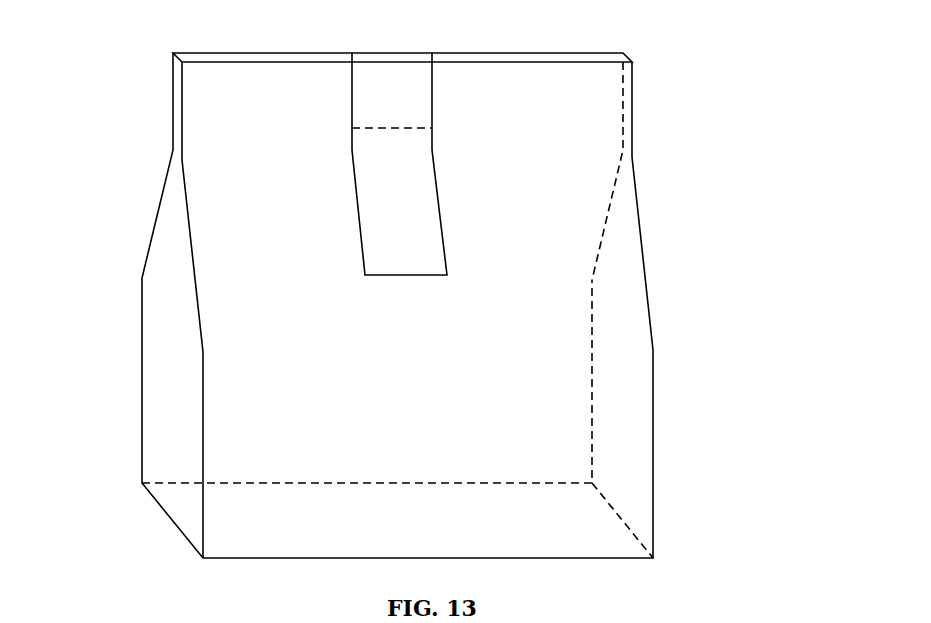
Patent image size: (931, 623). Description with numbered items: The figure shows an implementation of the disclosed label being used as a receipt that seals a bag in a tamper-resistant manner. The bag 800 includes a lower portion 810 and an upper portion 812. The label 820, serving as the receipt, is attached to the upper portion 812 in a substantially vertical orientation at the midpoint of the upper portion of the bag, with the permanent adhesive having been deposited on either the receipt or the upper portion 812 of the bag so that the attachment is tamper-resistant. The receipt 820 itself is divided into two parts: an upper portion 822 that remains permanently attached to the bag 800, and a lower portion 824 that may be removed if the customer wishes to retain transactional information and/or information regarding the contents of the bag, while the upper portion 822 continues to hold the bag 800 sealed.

The bag 800 is at (433, 305).
The lower portion 810 is at (620, 438).
The upper portion 812 is at (600, 108).
The label 820 is at (256, 164).
The upper portion of receipt 822 is at (413, 107).
The lower portion of receipt 824 is at (398, 187).